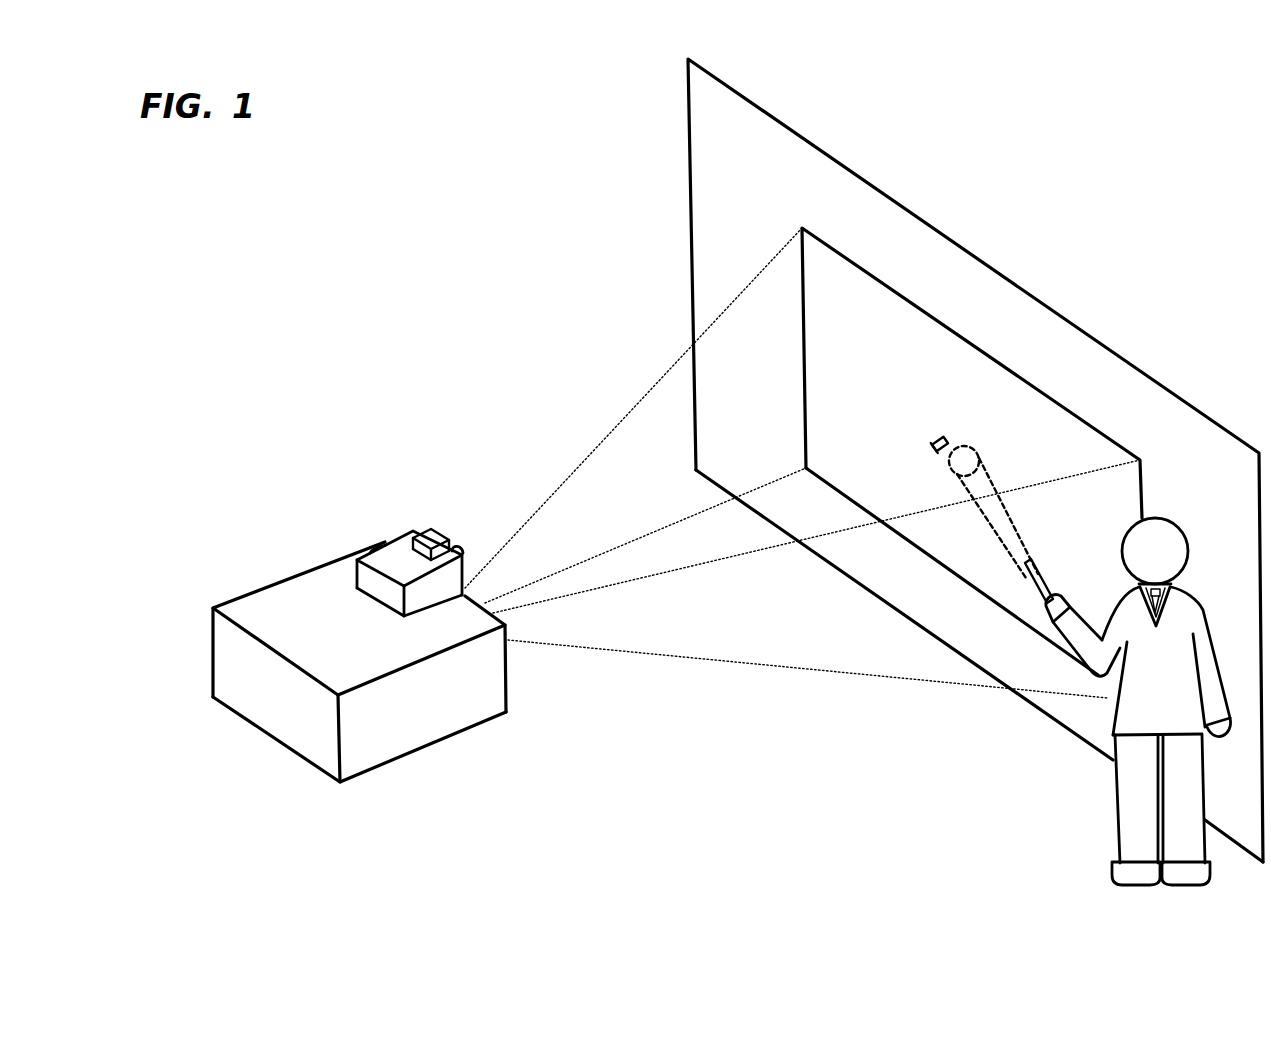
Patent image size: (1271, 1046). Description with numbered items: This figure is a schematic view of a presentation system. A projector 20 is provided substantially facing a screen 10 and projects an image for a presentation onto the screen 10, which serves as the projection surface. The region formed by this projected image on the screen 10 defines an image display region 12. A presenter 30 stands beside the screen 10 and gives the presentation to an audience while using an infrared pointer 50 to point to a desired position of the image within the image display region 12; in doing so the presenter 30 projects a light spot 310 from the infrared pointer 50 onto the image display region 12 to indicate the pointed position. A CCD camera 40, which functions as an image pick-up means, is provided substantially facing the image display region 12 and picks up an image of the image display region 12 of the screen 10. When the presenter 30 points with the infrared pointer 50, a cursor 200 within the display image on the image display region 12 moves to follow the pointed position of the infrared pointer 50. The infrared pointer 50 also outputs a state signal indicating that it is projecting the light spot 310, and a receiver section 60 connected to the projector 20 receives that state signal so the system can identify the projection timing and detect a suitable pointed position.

The screen 10 is at (1009, 285).
The image display region 12 is at (1009, 368).
The projector 20 is at (485, 703).
The presenter 30 is at (1160, 517).
The CCD camera 40 is at (402, 550).
The infrared pointer 50 is at (1048, 593).
The receiver section 60 is at (430, 536).
The cursor 200 is at (942, 438).
The light spot 310 is at (978, 451).